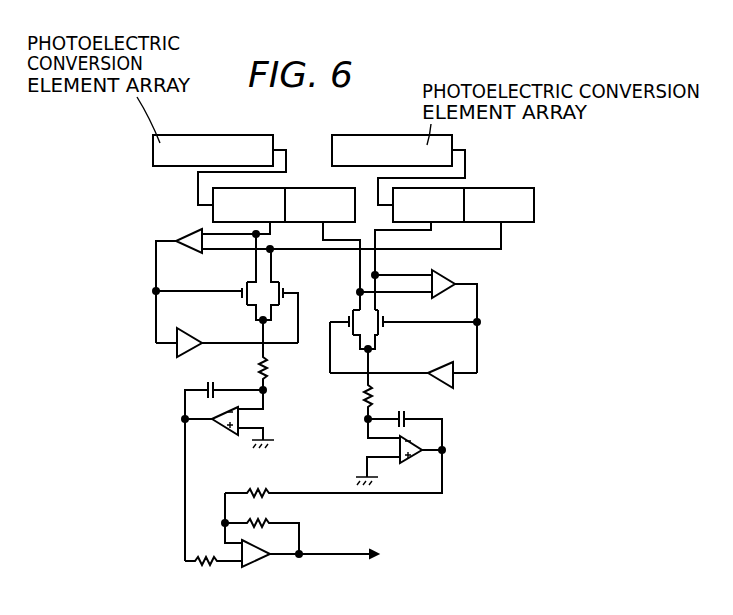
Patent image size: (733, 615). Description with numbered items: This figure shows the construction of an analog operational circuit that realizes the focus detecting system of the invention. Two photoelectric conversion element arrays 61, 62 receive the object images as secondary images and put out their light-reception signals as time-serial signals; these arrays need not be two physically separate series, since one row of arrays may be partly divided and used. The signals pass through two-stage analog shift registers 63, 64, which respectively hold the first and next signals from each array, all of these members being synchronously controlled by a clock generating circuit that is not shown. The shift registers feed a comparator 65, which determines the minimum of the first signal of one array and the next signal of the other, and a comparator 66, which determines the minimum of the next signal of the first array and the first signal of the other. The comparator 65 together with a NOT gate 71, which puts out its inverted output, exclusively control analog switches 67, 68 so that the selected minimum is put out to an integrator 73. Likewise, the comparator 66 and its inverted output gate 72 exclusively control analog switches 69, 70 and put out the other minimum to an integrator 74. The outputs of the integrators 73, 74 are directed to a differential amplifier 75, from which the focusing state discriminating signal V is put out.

The photoelectric conversion element array 61 is at (193, 131).
The photoelectric conversion element array 62 is at (373, 131).
The two-stage analog shift register 63 is at (308, 187).
The two-stage analog shift register 64 is at (495, 187).
The comparator 65 is at (189, 231).
The comparator 66 is at (446, 277).
The analog switch 67 is at (244, 283).
The analog switch 68 is at (285, 289).
The analog switch 69 is at (347, 315).
The analog switch 70 is at (396, 307).
The NOT gate 71 is at (192, 338).
The inverted output gate 72 is at (441, 366).
The integrator 73 is at (228, 437).
The integrator 74 is at (410, 460).
The differential amplifier 75 is at (252, 568).